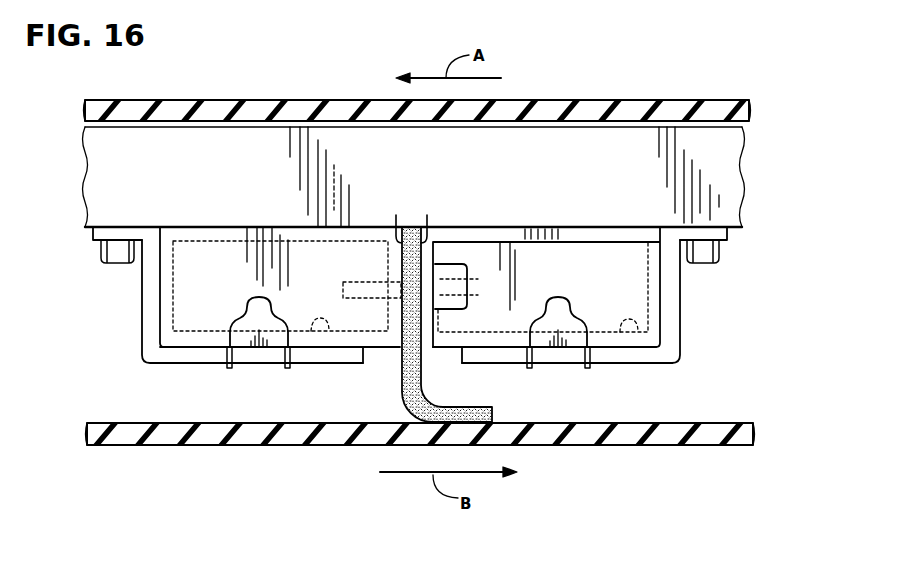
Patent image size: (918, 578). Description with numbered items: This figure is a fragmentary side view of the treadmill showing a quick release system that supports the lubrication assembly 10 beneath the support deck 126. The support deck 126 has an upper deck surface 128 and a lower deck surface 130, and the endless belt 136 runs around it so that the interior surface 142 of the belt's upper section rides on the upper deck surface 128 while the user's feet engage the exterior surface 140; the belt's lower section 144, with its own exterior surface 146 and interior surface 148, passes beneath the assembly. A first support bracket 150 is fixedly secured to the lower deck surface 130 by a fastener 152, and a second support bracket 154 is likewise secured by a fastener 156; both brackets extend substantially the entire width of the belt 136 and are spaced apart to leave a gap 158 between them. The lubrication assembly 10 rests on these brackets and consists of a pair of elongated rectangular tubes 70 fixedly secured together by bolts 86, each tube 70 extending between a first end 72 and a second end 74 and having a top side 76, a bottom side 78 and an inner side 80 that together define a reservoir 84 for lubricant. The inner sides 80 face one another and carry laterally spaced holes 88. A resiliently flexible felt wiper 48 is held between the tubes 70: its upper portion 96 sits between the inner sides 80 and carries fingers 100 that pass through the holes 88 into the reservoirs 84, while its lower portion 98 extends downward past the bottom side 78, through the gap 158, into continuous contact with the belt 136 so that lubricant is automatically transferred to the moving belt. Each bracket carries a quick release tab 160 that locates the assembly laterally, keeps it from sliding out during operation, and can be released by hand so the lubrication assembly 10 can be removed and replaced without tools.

The lubrication assembly 10 is at (755, 307).
The wiper 48 is at (413, 402).
The elongated rectangular tube 70 is at (277, 28).
The first end 72 is at (639, 295).
The second end 74 is at (178, 308).
The top side 76 is at (193, 227).
The bottom side 78 is at (210, 348).
The inner side 80 is at (396, 233).
The reservoir 84 is at (323, 333).
The bolt 86 is at (443, 263).
The hole 88 is at (431, 322).
The upper portion 96 is at (416, 233).
The lower portion 98 is at (492, 413).
The finger 100 is at (334, 282).
The support deck 126 is at (732, 193).
The upper deck surface 128 is at (536, 126).
The lower deck surface 130 is at (735, 232).
The endless belt 136 is at (714, 112).
The exterior surface 140 is at (622, 100).
The interior surface 142 is at (748, 127).
The lower section 144 is at (125, 435).
The exterior surface 146 is at (158, 445).
The interior surface 148 is at (108, 422).
The first support bracket 150 is at (672, 357).
The fastener 152 is at (702, 255).
The second support bracket 154 is at (150, 285).
The fastener 156 is at (118, 252).
The gap 158 is at (458, 350).
The quick release tab 160 is at (257, 317).